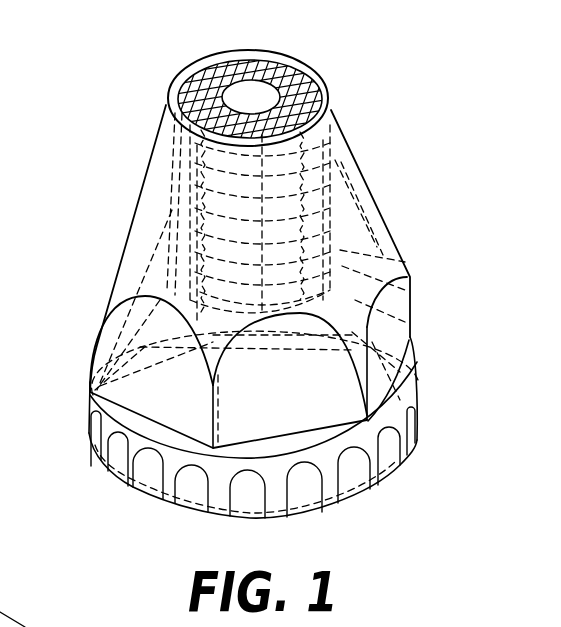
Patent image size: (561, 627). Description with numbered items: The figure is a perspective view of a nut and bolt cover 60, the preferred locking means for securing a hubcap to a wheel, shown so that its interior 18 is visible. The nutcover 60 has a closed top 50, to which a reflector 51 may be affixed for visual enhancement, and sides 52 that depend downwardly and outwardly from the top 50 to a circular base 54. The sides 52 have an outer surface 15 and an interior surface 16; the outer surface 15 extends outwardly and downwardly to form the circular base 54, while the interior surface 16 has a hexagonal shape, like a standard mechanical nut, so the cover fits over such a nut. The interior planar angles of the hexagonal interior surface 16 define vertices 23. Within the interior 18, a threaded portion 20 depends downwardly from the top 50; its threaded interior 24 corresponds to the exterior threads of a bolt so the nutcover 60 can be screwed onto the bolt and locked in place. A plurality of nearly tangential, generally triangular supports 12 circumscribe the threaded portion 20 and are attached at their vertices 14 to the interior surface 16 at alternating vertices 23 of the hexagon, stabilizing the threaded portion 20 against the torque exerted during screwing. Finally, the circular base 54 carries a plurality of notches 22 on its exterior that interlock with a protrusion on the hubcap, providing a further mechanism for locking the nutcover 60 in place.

The nut and bolt cover 60 is at (150, 102).
The closed top 50 is at (220, 53).
The reflector 51 is at (297, 67).
The threaded interior 24 is at (318, 157).
The outer surface 15 is at (362, 162).
The nearly tangential supports 12 is at (377, 243).
The sides 52 is at (134, 174).
The threaded portion 20 is at (185, 208).
The vertices 23 is at (115, 296).
The interior surface 16 is at (142, 352).
The vertices of supports 14 is at (92, 390).
The circular base 54 is at (370, 422).
The interior 18 is at (333, 383).
The notches 22 is at (217, 494).